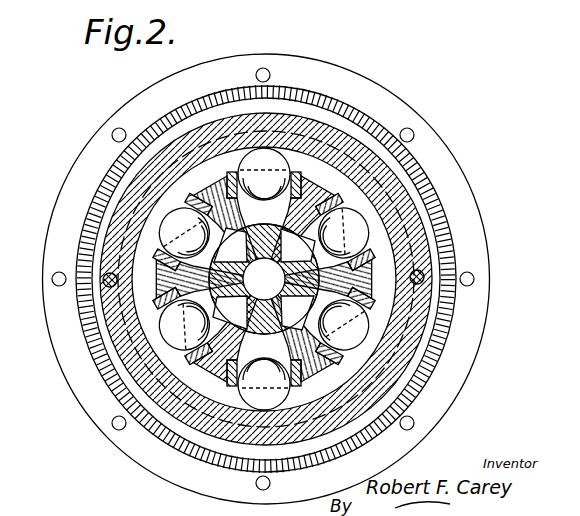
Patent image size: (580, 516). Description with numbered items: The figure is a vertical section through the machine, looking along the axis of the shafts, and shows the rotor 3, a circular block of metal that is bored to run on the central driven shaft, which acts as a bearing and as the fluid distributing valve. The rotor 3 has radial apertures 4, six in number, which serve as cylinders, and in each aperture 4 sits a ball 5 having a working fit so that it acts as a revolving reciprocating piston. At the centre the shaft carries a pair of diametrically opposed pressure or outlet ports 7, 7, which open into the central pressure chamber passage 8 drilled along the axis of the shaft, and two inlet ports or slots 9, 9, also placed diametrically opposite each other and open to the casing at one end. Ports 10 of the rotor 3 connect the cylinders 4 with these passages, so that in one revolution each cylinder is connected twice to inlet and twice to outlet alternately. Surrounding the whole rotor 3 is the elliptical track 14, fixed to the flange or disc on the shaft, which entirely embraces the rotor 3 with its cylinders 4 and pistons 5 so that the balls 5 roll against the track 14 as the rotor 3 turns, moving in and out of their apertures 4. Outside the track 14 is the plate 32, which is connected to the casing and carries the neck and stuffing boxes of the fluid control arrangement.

The plate 32 is at (457, 183).
The elliptical track 14 is at (197, 427).
The rotor 3 is at (263, 278).
The radial apertures 4 is at (302, 187).
The ball 5 is at (264, 279).
The ports of the rotor 10 is at (503, 333).
The central pressure chamber passage 8 is at (264, 279).
The pressure or outlet ports 7 is at (264, 279).
The inlet ports or slots 9 is at (264, 279).